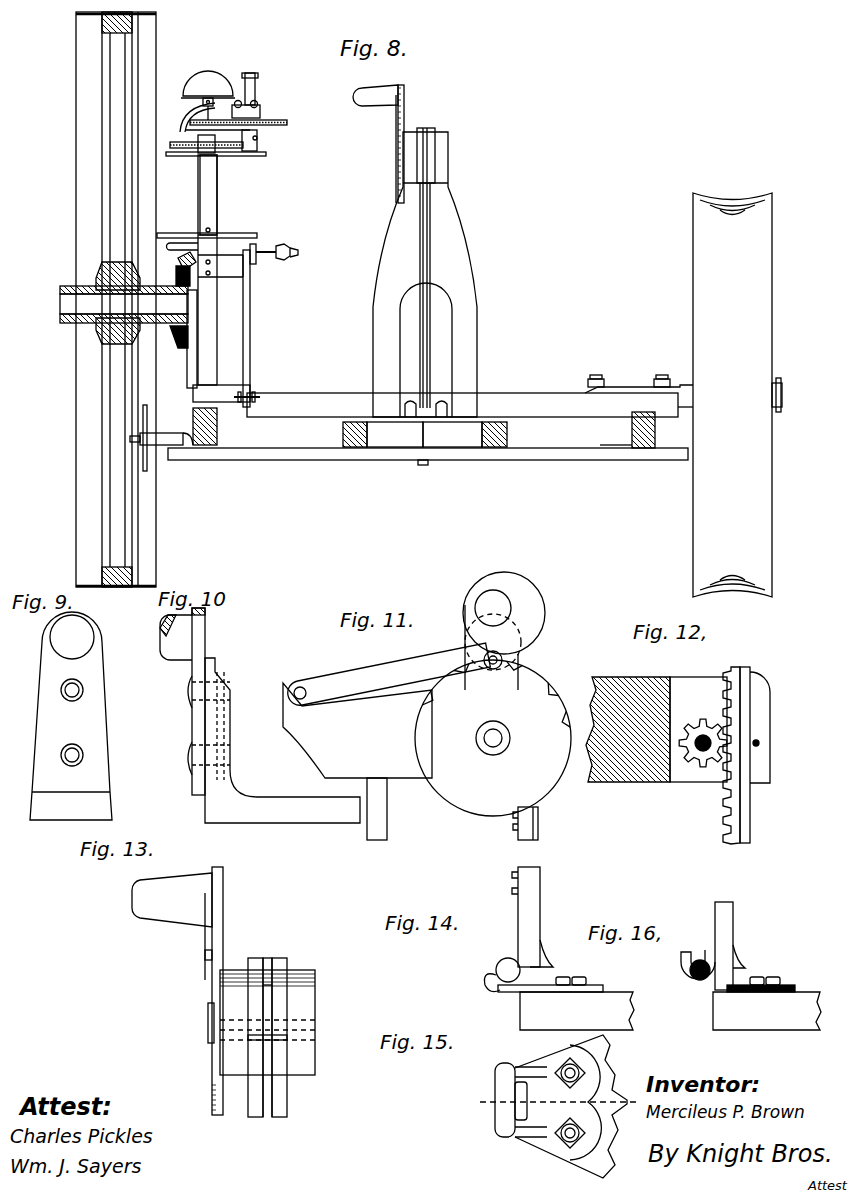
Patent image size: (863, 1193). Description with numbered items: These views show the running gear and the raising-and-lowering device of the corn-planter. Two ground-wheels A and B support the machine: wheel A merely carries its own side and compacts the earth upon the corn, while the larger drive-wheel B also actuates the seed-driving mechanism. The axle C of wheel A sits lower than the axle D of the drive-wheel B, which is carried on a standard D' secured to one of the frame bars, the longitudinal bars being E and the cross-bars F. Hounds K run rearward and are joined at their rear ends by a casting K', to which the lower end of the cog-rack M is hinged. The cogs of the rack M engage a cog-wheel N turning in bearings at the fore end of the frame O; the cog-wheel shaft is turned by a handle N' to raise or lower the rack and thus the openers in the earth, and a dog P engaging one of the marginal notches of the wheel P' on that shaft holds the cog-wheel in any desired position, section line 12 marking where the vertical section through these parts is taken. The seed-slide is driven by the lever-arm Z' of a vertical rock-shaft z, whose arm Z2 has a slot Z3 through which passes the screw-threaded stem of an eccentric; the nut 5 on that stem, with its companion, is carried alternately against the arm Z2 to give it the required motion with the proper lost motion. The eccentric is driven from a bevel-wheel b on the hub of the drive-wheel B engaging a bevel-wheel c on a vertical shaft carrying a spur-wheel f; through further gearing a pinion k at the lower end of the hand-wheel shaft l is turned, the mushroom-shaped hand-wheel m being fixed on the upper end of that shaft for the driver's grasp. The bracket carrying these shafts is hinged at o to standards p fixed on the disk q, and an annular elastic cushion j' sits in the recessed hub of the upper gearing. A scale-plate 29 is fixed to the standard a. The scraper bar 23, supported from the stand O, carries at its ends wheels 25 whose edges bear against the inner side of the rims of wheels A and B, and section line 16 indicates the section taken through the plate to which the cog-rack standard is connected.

In FIG. 8, the ground-wheel A is at (732, 395).
In FIG. 8, the drive-wheel B is at (101, 299).
In FIG. 8, the axle of wheel A C is at (786, 395).
In FIG. 8, the axle of drive-wheel D is at (110, 304).
In FIG. 9, the axle of drive-wheel D is at (71, 716).
In FIG. 10, the axle of drive-wheel D is at (176, 637).
In FIG. 8, the standard D' is at (183, 339).
In FIG. 9, the standard D' is at (82, 722).
In FIG. 10, the standard D' is at (274, 715).
In FIG. 8, the longitudinal bars E is at (430, 428).
In FIG. 8, the cross-bars F is at (470, 396).
In FIG. 8, the hounds K is at (433, 434).
In FIG. 14, the hounds K is at (577, 1011).
In FIG. 16, the hounds K is at (767, 1011).
In FIG. 15, the hounds K is at (577, 1106).
In FIG. 8, the casting K' is at (424, 434).
In FIG. 14, the casting K' is at (550, 974).
In FIG. 16, the casting K' is at (761, 975).
In FIG. 15, the casting K' is at (540, 1103).
In FIG. 8, the cog-rack M is at (427, 272).
In FIG. 11, the cog-rack M is at (493, 750).
In FIG. 12, the cog-rack M is at (746, 755).
In FIG. 13, the cog-rack M is at (281, 1051).
In FIG. 14, the cog-rack M is at (521, 929).
In FIG. 16, the cog-rack M is at (718, 946).
In FIG. 12, the cog-wheel N is at (698, 729).
In FIG. 8, the handle N' is at (365, 96).
In FIG. 8, the frame O is at (425, 274).
In FIG. 11, the frame O is at (357, 761).
In FIG. 12, the frame O is at (628, 717).
In FIG. 13, the frame O is at (312, 1020).
In FIG. 8, the dog P is at (391, 144).
In FIG. 11, the dog P is at (389, 673).
In FIG. 13, the dog P is at (184, 991).
In FIG. 11, the notched wheel P' is at (497, 646).
In FIG. 13, the notched wheel P' is at (198, 1022).
In FIG. 8, the standard a is at (221, 278).
In FIG. 8, the bevel-wheel b is at (172, 307).
In FIG. 8, the bevel-wheel c is at (176, 263).
In FIG. 8, the spur-wheel f is at (213, 142).
In FIG. 8, the annular elastic cushion j' is at (236, 101).
In FIG. 8, the pinion k is at (197, 117).
In FIG. 8, the hand-wheel shaft l is at (210, 109).
In FIG. 8, the hand-wheel m is at (208, 84).
In FIG. 8, the hinge o is at (258, 138).
In FIG. 8, the standards p is at (227, 141).
In FIG. 8, the disk q is at (223, 195).
In FIG. 8, the rock-shaft z is at (253, 328).
In FIG. 8, the lever-arm Z' is at (252, 404).
In FIG. 8, the rock-shaft arm Z2 is at (256, 262).
In FIG. 8, the slot Z3 is at (273, 244).
In FIG. 8, the nut 5 is at (294, 257).
In FIG. 13, the section line 12 is at (250, 958).
In FIG. 15, the section line 16 is at (551, 1103).
In FIG. 8, the scraper bar 23 is at (428, 464).
In FIG. 8, the wheels 25 is at (161, 448).
In FIG. 8, the scale-plate 29 is at (207, 234).